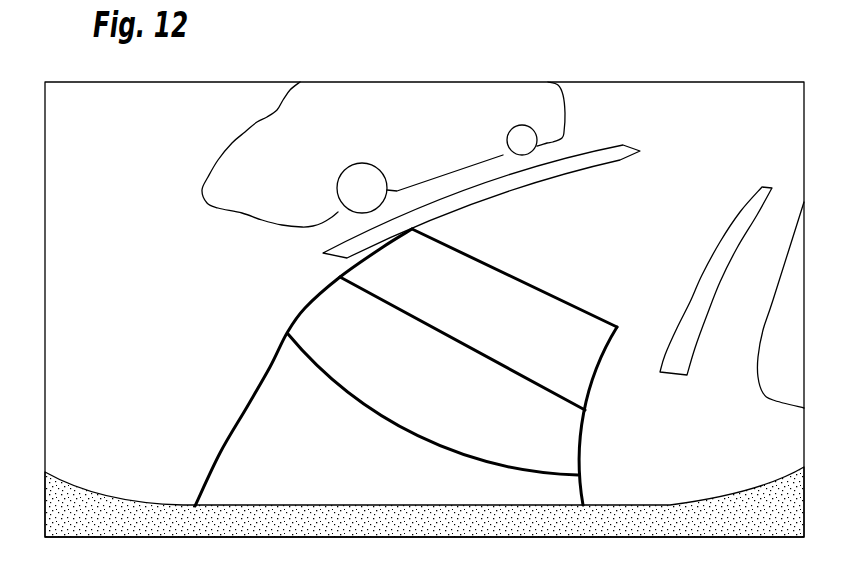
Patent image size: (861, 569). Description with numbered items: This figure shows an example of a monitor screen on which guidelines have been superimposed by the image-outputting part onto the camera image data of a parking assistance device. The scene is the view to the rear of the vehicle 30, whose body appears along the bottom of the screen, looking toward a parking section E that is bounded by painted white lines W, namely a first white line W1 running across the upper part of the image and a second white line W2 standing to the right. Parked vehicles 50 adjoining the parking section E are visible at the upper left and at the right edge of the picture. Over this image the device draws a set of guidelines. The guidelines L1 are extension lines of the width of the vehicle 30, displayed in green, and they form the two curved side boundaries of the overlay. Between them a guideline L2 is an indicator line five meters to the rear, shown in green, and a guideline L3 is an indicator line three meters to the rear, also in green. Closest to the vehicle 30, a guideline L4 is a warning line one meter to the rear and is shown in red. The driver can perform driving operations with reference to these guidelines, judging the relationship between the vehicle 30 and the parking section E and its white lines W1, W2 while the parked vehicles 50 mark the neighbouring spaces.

The vehicle 30 is at (118, 498).
The parked vehicles 50 is at (238, 148).
The white line W is at (547, 260).
The first white line W1 is at (505, 175).
The second white line W2 is at (692, 322).
The parking section E is at (720, 195).
The guidelines L1 is at (305, 308).
The guideline L2 is at (506, 276).
The guideline L3 is at (457, 347).
The guideline L4 is at (377, 416).